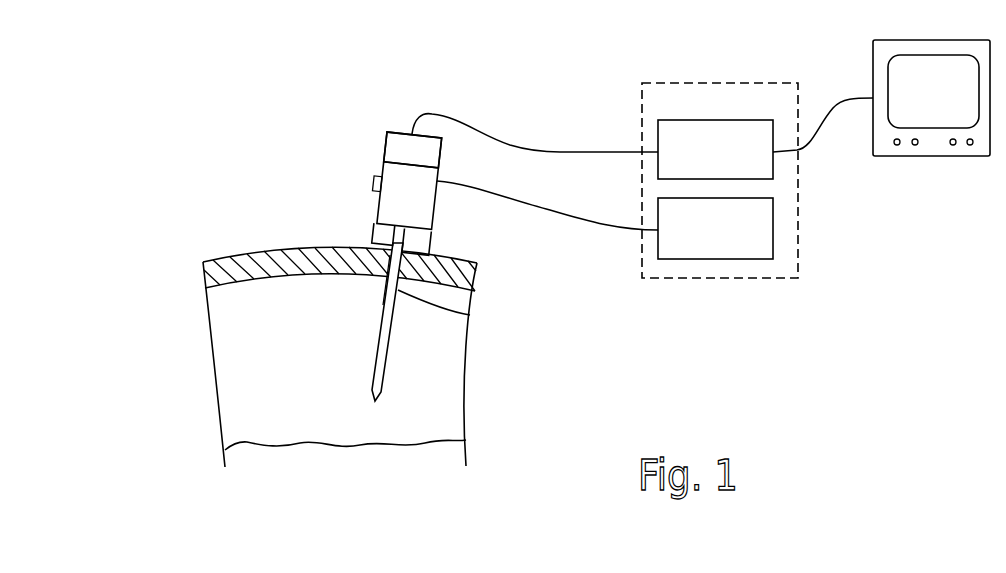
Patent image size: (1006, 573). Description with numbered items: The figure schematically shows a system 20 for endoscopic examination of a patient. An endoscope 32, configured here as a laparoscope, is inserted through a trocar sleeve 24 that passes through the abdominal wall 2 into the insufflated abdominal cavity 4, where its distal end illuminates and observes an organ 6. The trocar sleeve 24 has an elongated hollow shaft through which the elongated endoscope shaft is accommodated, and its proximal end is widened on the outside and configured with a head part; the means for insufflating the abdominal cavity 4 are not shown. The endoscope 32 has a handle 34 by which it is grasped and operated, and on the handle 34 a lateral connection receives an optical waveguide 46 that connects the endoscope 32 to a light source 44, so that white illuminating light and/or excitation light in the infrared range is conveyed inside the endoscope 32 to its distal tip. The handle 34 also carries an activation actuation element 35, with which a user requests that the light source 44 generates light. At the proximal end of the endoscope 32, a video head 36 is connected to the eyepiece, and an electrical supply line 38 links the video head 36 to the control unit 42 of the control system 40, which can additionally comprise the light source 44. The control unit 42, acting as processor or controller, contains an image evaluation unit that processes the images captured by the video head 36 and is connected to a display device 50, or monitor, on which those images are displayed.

The abdominal wall 2 is at (223, 277).
The abdominal cavity 4 is at (245, 343).
The organ 6 is at (247, 442).
The system 20 is at (845, 388).
The trocar sleeve 24 is at (470, 315).
The endoscope 32 is at (385, 347).
The handle 34 is at (423, 198).
The activation actuation element 35 is at (373, 180).
The video head 36 is at (432, 152).
The electrical supply line 38 is at (572, 150).
The control system 40 is at (720, 219).
The control unit 42 is at (701, 165).
The light source 44 is at (701, 243).
The optical waveguide 46 is at (610, 230).
The display device 50 is at (918, 105).